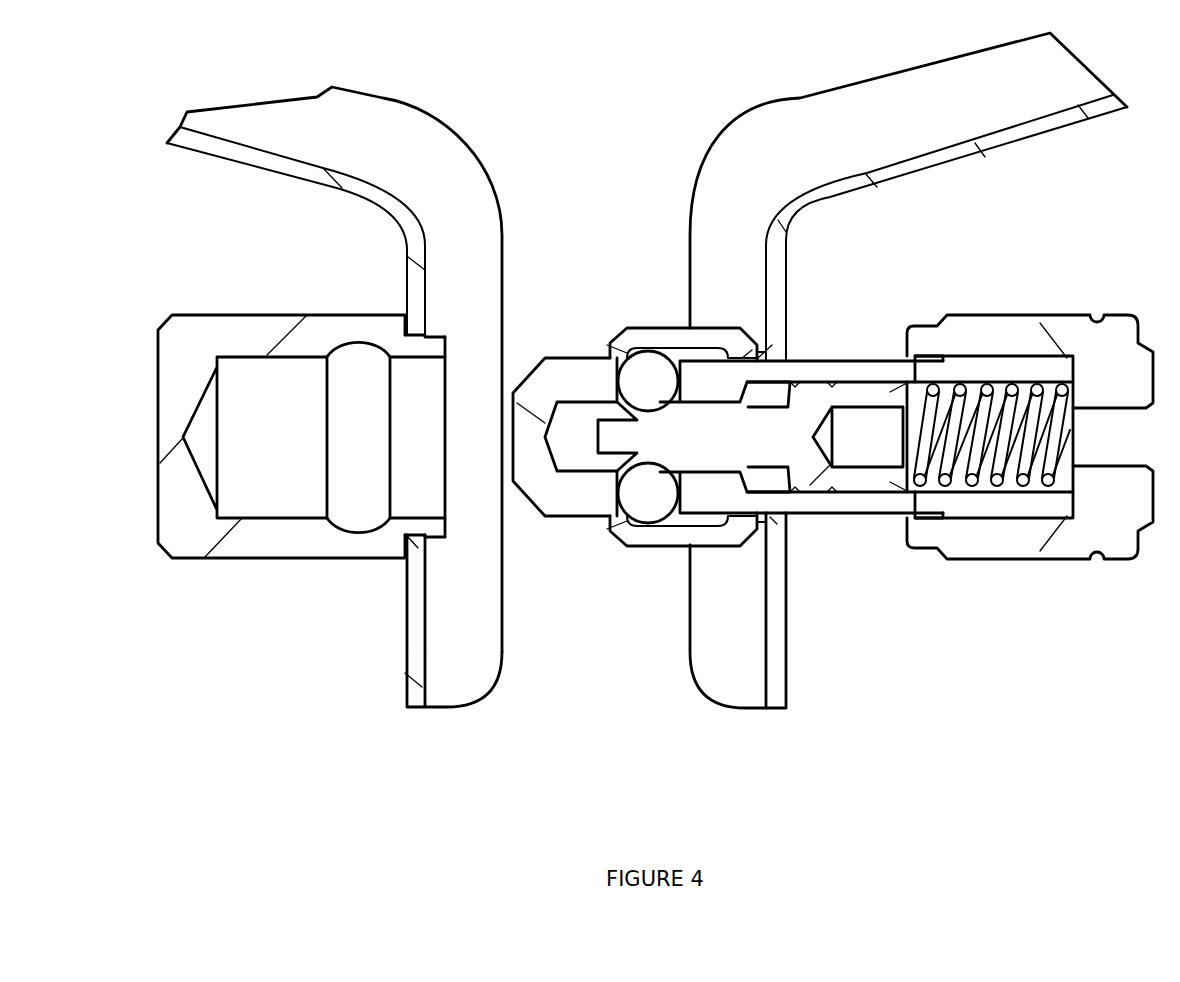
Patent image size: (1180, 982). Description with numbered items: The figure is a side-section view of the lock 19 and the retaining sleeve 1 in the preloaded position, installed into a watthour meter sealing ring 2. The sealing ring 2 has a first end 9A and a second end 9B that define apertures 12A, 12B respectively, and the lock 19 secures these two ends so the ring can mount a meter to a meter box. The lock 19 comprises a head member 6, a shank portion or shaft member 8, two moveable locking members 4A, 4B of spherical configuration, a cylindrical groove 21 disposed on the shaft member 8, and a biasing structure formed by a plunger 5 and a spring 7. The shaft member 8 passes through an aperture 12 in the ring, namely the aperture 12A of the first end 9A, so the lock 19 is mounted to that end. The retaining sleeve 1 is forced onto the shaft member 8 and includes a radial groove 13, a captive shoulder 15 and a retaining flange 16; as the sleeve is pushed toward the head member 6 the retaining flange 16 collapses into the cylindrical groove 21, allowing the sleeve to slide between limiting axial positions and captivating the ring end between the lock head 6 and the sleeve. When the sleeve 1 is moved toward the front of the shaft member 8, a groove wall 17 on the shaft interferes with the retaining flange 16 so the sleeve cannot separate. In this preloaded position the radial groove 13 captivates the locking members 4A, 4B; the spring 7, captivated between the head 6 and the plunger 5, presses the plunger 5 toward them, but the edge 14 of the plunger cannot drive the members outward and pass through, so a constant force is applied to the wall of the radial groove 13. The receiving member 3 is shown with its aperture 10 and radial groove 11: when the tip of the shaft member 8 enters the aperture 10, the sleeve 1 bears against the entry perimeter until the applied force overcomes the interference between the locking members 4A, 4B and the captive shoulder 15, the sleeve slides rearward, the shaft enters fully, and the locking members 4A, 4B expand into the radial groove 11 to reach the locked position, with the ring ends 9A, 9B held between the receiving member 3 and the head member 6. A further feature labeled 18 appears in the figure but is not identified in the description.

The retaining sleeve 1 is at (652, 525).
The meter sealing ring 2 is at (466, 110).
The receiving member 3 is at (204, 350).
The moveable locking member 4A is at (688, 547).
The moveable locking member 4B is at (665, 383).
The plunger 5 is at (877, 470).
The head member 6 is at (1035, 323).
The spring 7 is at (1033, 430).
The shaft member 8 is at (585, 495).
The first end of the sealing ring 9A is at (773, 662).
The second end of the sealing ring 9B is at (450, 683).
The aperture of the lock receiving member 10 is at (417, 452).
The radial groove 11 is at (350, 503).
The aperture 12 is at (780, 378).
The aperture 12A is at (782, 352).
The aperture 12B is at (427, 337).
The radial groove 13 is at (663, 378).
The edge of the plunger 14 is at (675, 405).
The captive shoulder 15 is at (627, 520).
The retaining flange 16 is at (758, 350).
The groove wall 17 is at (742, 350).
The shoulder 18 is at (908, 347).
The lock 19 is at (1078, 634).
The cylindrical groove 21 is at (830, 363).